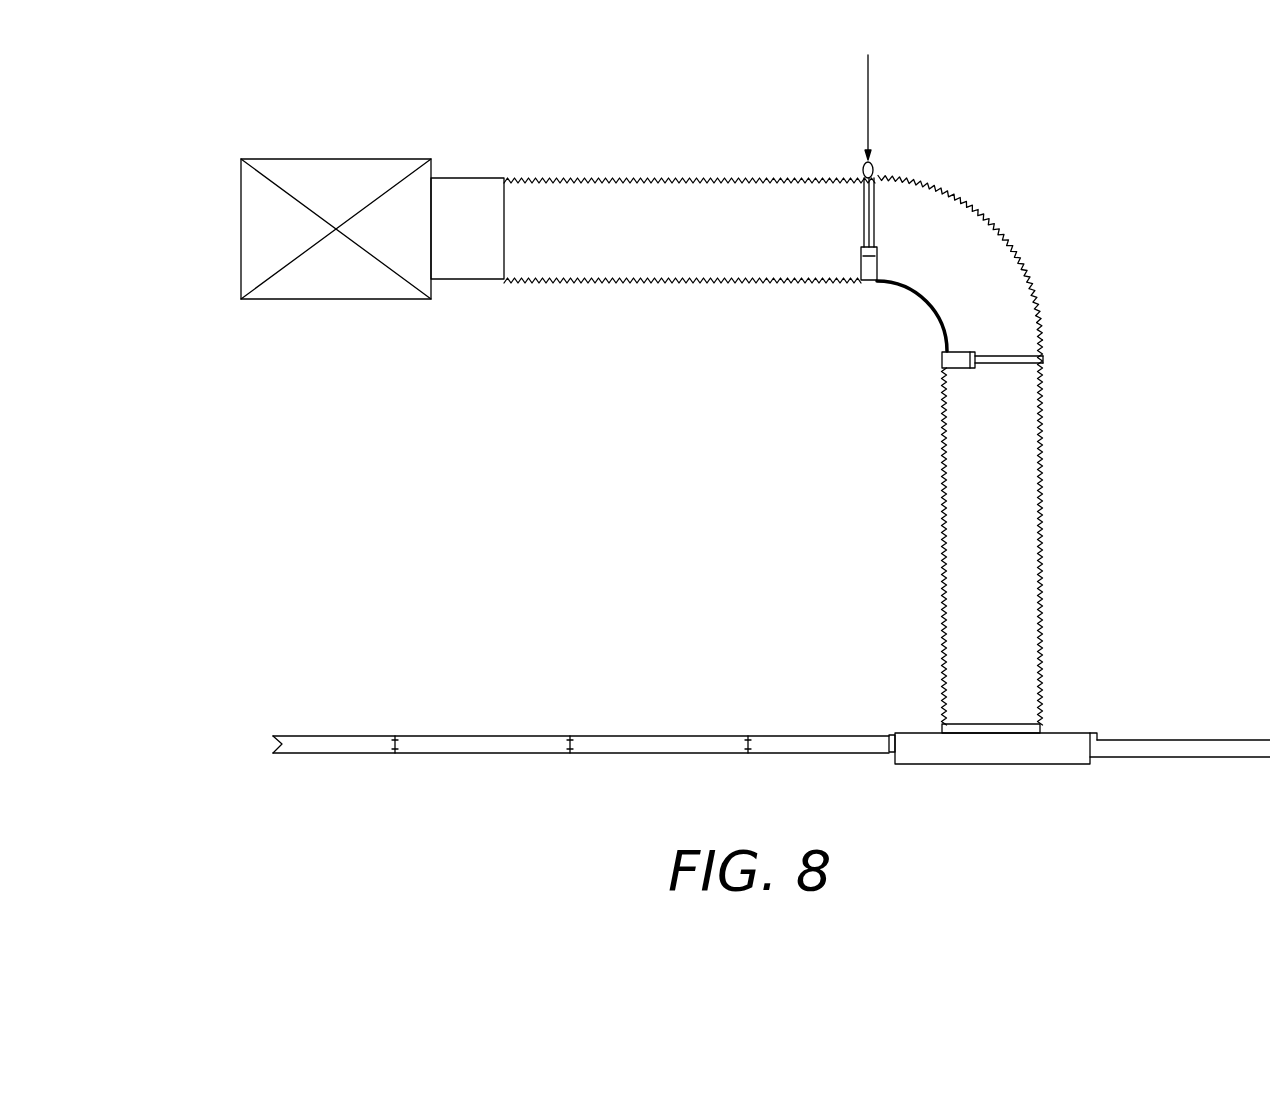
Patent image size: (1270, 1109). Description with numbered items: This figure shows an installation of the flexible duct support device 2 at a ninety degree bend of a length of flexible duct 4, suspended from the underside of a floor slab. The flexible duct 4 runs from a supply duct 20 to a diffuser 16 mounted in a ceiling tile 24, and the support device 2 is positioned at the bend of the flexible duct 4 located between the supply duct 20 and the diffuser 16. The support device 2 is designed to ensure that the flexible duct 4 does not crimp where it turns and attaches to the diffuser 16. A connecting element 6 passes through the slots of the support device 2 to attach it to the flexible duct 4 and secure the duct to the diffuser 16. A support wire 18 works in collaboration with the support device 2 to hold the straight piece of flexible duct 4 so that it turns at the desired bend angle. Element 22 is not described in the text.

The structural support device 2 is at (915, 308).
The flexible duct 4 is at (605, 240).
The connecting element 6 is at (1025, 358).
The diffuser 16 is at (1090, 764).
The support wire 18 is at (868, 102).
The supply duct 20 is at (240, 158).
The adapter 22 is at (466, 179).
The ceiling tile 24 is at (272, 744).